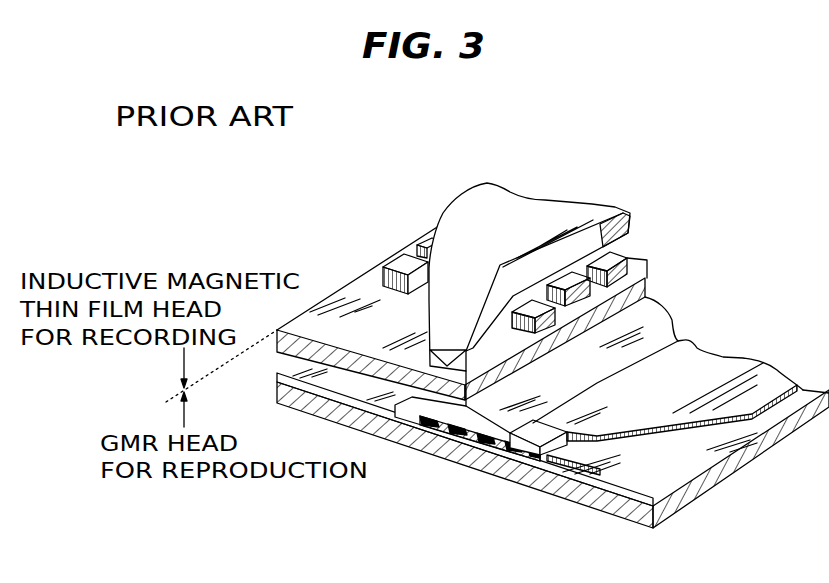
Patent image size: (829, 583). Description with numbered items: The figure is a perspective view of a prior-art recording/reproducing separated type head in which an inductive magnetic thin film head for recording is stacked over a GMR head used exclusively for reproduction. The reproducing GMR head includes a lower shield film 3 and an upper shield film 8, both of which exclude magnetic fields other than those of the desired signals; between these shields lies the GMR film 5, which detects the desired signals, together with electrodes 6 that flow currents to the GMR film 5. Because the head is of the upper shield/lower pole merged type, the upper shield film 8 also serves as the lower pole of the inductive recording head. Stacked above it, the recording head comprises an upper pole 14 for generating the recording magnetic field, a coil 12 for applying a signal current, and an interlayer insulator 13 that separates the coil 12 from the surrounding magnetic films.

The lower shield film 3 is at (733, 467).
The GMR film 5 is at (474, 444).
The electrodes 6 is at (521, 440).
The upper shield film 8 is at (357, 290).
The coil 12 is at (647, 293).
The interlayer insulator 13 is at (620, 247).
The upper pole 14 is at (543, 210).